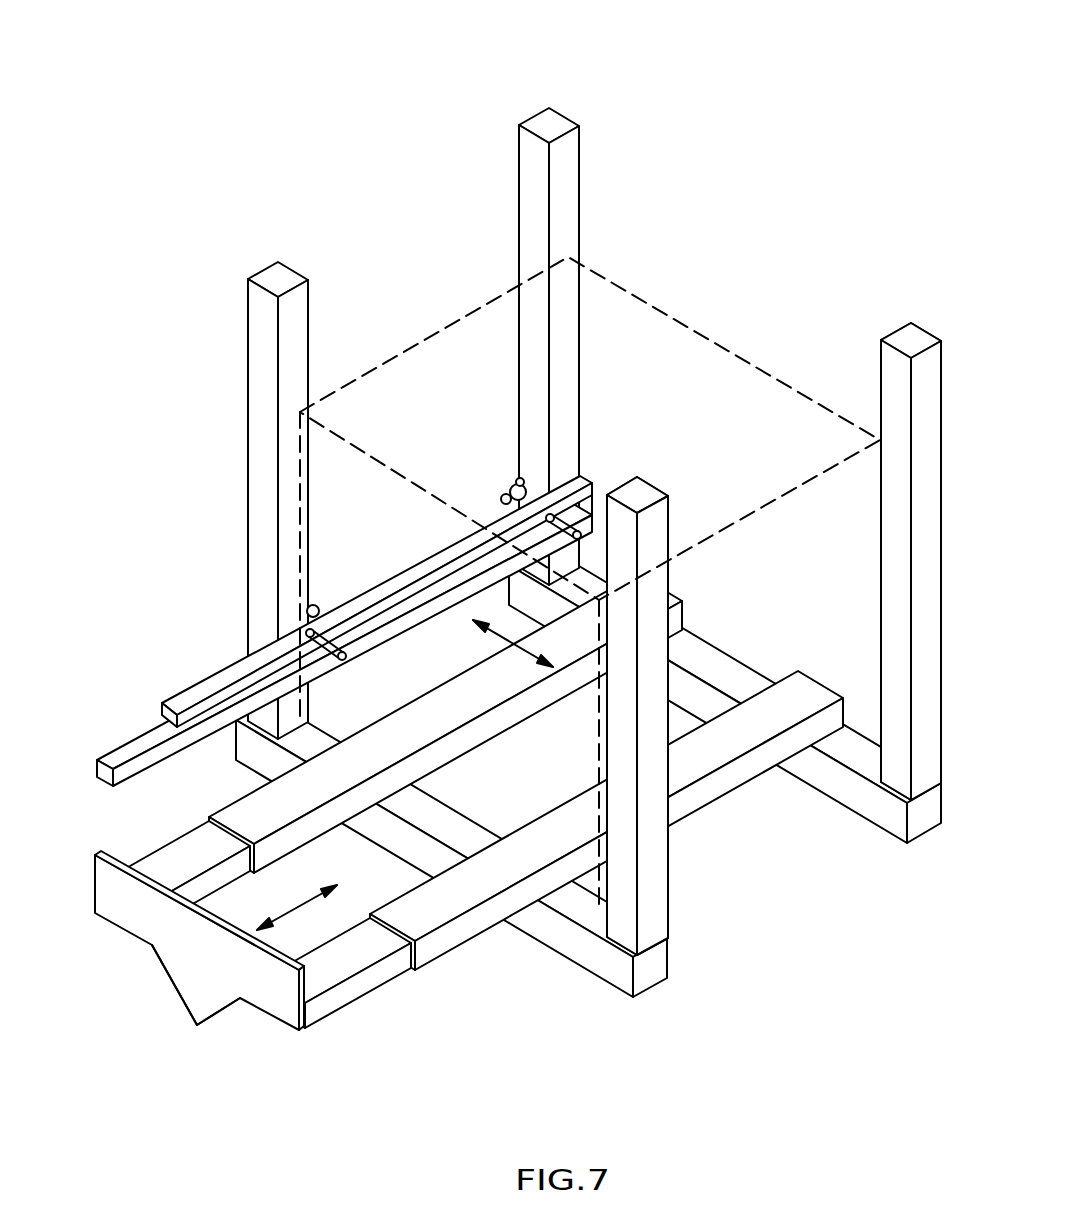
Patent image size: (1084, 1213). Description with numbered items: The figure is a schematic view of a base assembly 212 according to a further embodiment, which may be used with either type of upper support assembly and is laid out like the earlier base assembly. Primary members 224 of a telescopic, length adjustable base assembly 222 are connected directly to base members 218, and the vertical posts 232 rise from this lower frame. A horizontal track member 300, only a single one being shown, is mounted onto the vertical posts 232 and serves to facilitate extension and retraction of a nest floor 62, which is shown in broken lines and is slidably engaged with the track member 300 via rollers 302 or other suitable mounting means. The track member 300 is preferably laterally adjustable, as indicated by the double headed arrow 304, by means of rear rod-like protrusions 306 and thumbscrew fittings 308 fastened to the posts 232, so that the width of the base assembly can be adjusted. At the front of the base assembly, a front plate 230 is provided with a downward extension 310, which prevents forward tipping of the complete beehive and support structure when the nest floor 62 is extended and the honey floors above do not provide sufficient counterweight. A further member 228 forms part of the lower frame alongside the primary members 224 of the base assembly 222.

The base assembly 212 is at (506, 551).
The vertical posts 232 is at (535, 192).
The nest floor 62 is at (688, 322).
The thumbscrew fittings 308 is at (521, 478).
The rear rod-like protrusions 306 is at (500, 493).
The rollers 302 is at (581, 480).
The horizontal track member 300 is at (207, 690).
The base members 218 is at (720, 662).
The double headed arrow 304 is at (527, 657).
The primary members 224 is at (727, 775).
The telescopic, length adjustable base assembly 222 is at (483, 833).
The front plate 230 is at (201, 972).
The downward extension 310 is at (209, 1003).
The slide beam 228 is at (358, 985).